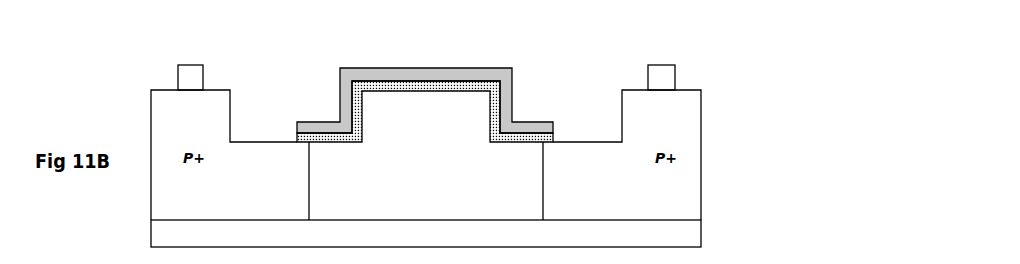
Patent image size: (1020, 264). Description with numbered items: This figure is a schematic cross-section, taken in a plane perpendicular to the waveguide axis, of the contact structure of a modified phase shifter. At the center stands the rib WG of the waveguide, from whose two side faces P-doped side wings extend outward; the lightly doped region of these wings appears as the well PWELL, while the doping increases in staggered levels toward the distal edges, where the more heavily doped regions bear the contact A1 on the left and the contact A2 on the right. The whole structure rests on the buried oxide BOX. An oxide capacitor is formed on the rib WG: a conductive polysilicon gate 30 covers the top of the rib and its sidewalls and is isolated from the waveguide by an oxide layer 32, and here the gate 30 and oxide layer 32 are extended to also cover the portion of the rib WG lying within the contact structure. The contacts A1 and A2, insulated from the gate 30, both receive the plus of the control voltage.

The gate 30 is at (438, 75).
The oxide layer 32 is at (380, 82).
The center rib WG is at (399, 120).
The buried oxide layer BOX is at (426, 233).
The P-well region PWELL is at (426, 181).
The contact A1 is at (189, 67).
The contact A2 is at (660, 67).